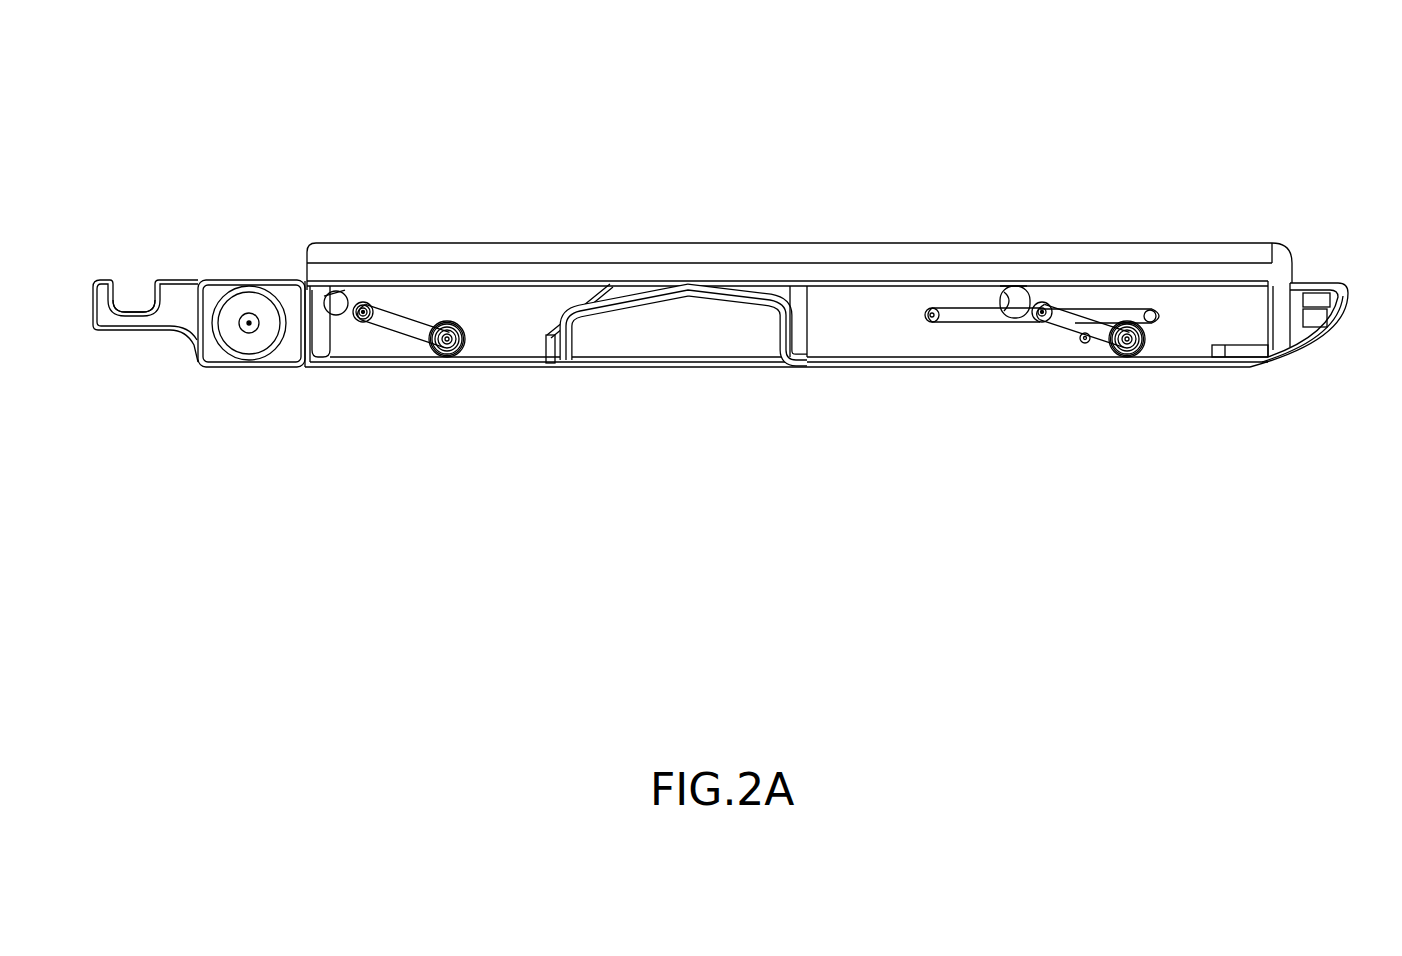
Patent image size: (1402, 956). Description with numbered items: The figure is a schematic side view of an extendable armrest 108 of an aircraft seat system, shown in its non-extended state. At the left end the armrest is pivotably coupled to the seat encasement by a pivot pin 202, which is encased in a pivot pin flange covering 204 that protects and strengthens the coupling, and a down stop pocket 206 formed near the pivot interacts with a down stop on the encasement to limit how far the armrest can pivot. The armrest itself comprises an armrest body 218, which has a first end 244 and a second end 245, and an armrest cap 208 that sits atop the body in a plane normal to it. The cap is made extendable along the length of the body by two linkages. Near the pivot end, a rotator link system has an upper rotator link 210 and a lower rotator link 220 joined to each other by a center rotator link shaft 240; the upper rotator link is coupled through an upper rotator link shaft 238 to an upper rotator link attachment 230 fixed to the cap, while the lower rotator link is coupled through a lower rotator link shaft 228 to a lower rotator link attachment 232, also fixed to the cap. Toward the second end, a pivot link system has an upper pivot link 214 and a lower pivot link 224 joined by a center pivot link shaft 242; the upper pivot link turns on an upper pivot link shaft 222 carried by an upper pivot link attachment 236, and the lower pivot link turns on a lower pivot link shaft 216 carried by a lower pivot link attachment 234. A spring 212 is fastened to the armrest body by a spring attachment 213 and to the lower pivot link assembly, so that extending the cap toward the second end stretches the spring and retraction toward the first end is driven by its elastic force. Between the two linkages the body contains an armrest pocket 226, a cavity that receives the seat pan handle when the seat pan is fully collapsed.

The extendable armrest 108 is at (110, 108).
The pivot pin 202 is at (250, 346).
The pivot pin flange covering 204 is at (249, 292).
The down stop pocket 206 is at (127, 307).
The armrest cap 208 is at (425, 258).
The upper rotator link 210 is at (338, 322).
The spring 212 is at (1115, 318).
The spring attachment 213 is at (923, 307).
The upper pivot link 214 is at (1030, 330).
The lower pivot link shaft 216 is at (1130, 358).
The armrest body 218 is at (835, 340).
The lower rotator link 220 is at (391, 340).
The upper pivot link shaft 222 is at (1010, 300).
The lower pivot link 224 is at (1081, 326).
The armrest pocket 226 is at (680, 338).
The lower rotator link shaft 228 is at (453, 345).
The upper rotator link attachment 230 is at (347, 297).
The lower rotator link attachment 232 is at (452, 322).
The lower pivot link attachment 234 is at (1150, 356).
The upper pivot link attachment 236 is at (1000, 303).
The upper rotator link shaft 238 is at (332, 292).
The center rotator link shaft 240 is at (362, 305).
The center pivot link shaft 242 is at (1040, 327).
The first end of the armrest body 244 is at (234, 428).
The second end of the armrest body 245 is at (1310, 367).